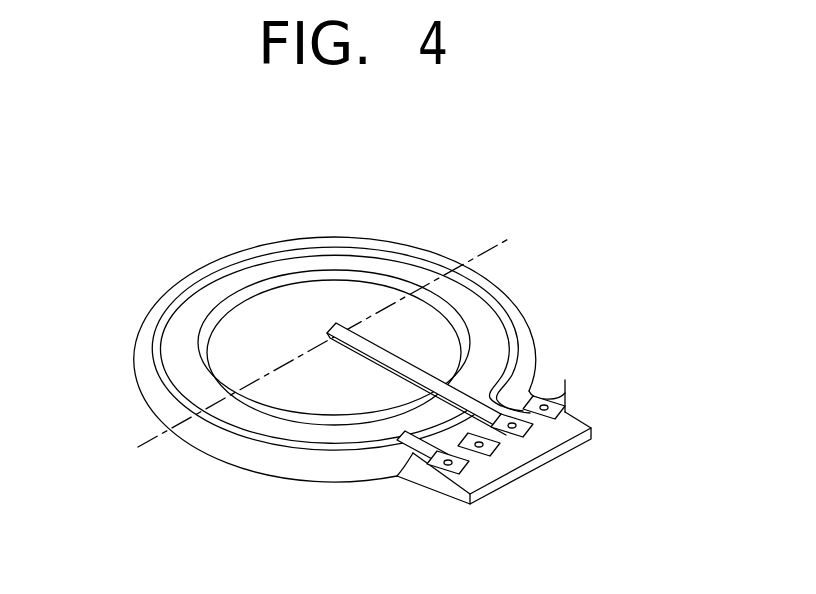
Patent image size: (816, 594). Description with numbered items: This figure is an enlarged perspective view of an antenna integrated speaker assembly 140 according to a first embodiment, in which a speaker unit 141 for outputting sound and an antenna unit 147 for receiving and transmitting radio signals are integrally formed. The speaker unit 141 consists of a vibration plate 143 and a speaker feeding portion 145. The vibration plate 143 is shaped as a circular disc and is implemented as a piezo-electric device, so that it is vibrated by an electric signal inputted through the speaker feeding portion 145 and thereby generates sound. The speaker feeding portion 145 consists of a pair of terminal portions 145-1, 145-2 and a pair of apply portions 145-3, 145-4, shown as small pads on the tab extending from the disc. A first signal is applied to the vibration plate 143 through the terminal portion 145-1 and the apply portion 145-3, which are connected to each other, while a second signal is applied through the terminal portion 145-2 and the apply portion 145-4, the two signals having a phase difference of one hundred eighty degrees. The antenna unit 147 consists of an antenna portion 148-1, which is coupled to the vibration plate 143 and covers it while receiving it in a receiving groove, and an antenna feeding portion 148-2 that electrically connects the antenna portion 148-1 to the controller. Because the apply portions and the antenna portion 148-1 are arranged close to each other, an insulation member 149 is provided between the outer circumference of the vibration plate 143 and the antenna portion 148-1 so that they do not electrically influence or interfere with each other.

The antenna integrated speaker assembly 140 is at (152, 236).
The speaker unit 141 is at (736, 405).
The vibration plate 143 is at (323, 439).
The speaker feeding portion 145 is at (686, 358).
The terminal portion 145-1 is at (578, 395).
The terminal portion 145-2 is at (501, 448).
The apply portion 145-3 is at (534, 430).
The apply portion 145-4 is at (470, 468).
The antenna unit 147 is at (659, 272).
The antenna portion 148-1 is at (508, 294).
The antenna feeding portion 148-2 is at (566, 380).
The insulation member 149 is at (158, 353).